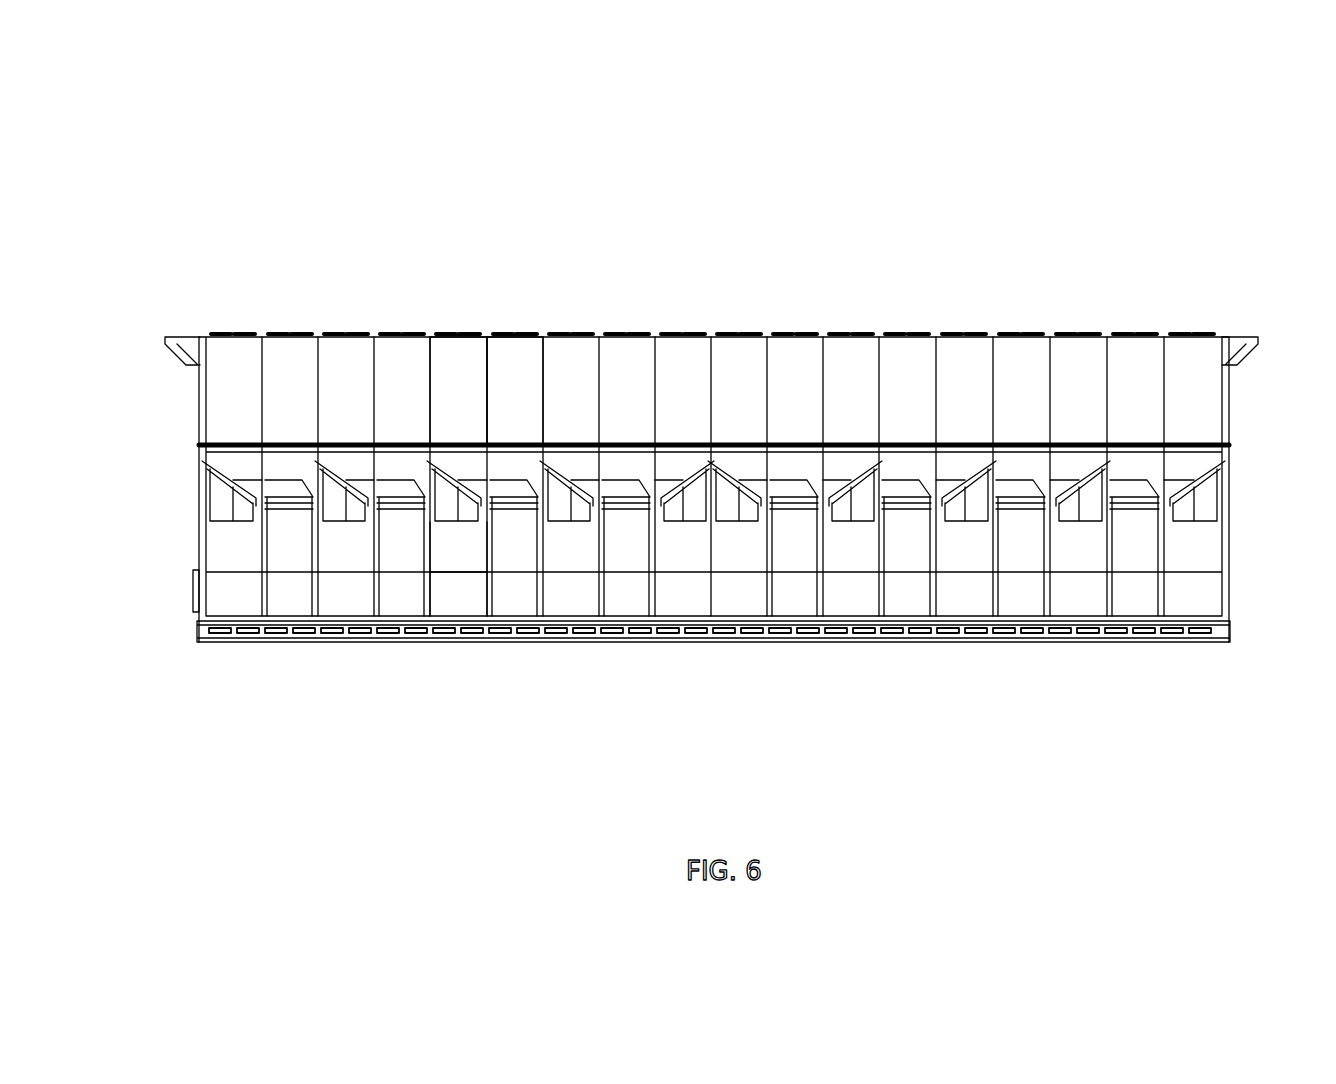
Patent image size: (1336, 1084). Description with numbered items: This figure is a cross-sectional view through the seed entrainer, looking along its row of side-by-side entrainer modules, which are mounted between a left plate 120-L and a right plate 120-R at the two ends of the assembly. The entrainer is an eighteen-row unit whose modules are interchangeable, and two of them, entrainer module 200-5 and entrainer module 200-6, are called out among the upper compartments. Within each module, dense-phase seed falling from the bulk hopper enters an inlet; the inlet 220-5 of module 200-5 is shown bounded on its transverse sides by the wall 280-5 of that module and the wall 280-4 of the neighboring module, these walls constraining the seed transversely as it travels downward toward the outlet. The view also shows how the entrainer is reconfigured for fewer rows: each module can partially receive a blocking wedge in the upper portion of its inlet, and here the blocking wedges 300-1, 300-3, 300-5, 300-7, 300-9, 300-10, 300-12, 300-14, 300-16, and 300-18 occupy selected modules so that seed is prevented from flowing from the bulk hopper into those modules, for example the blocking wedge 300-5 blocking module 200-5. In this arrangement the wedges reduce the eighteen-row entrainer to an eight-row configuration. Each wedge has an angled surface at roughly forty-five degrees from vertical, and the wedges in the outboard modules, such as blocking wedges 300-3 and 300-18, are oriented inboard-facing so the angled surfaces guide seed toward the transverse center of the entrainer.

The left plate 120-L is at (175, 335).
The right plate 120-R is at (1256, 335).
The entrainer module 200-5 is at (458, 378).
The entrainer module 200-6 is at (516, 374).
The blocking wedge 300-1 is at (226, 522).
The blocking wedge 300-3 is at (333, 524).
The blocking wedge 300-5 is at (436, 466).
The blocking wedge 300-7 is at (579, 524).
The blocking wedge 300-9 is at (707, 462).
The blocking wedge 300-10 is at (735, 522).
The blocking wedge 300-12 is at (870, 466).
The blocking wedge 300-14 is at (974, 522).
The blocking wedge 300-16 is at (1098, 466).
The blocking wedge 300-18 is at (1205, 522).
The wall 280-4 is at (428, 585).
The wall 280-5 is at (506, 585).
The inlet 220-5 is at (460, 582).